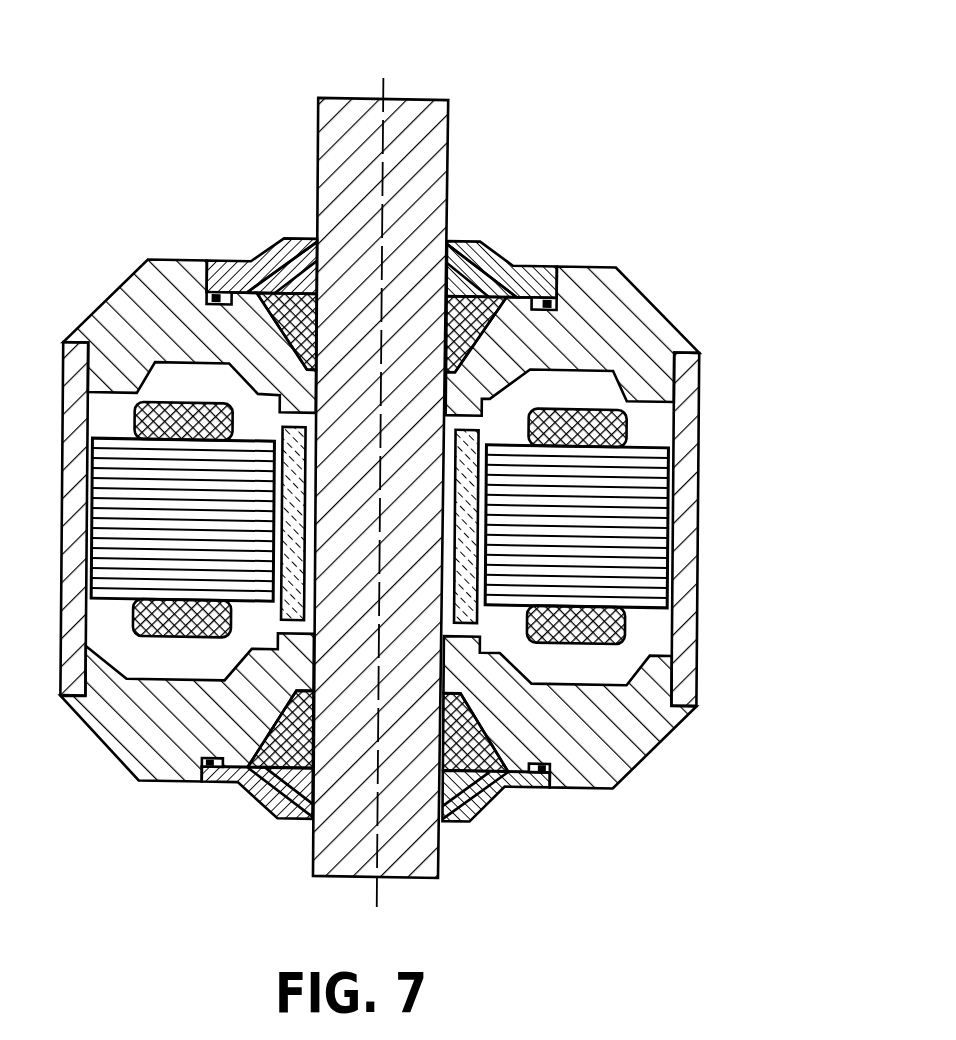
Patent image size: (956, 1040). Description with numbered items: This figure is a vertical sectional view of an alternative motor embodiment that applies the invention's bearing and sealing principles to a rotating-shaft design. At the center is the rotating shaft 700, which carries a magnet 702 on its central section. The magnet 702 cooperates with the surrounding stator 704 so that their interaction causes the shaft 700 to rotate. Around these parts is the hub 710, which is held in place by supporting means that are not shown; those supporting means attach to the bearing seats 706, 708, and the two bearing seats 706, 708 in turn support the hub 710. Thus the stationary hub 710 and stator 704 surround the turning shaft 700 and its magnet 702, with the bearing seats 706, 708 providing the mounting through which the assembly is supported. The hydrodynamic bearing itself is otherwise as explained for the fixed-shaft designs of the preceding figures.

The rotating shaft 700 is at (428, 142).
The magnet 702 is at (458, 605).
The stator 704 is at (640, 550).
The bearing seat 706 is at (622, 300).
The bearing seat 708 is at (648, 728).
The hub 710 is at (707, 419).